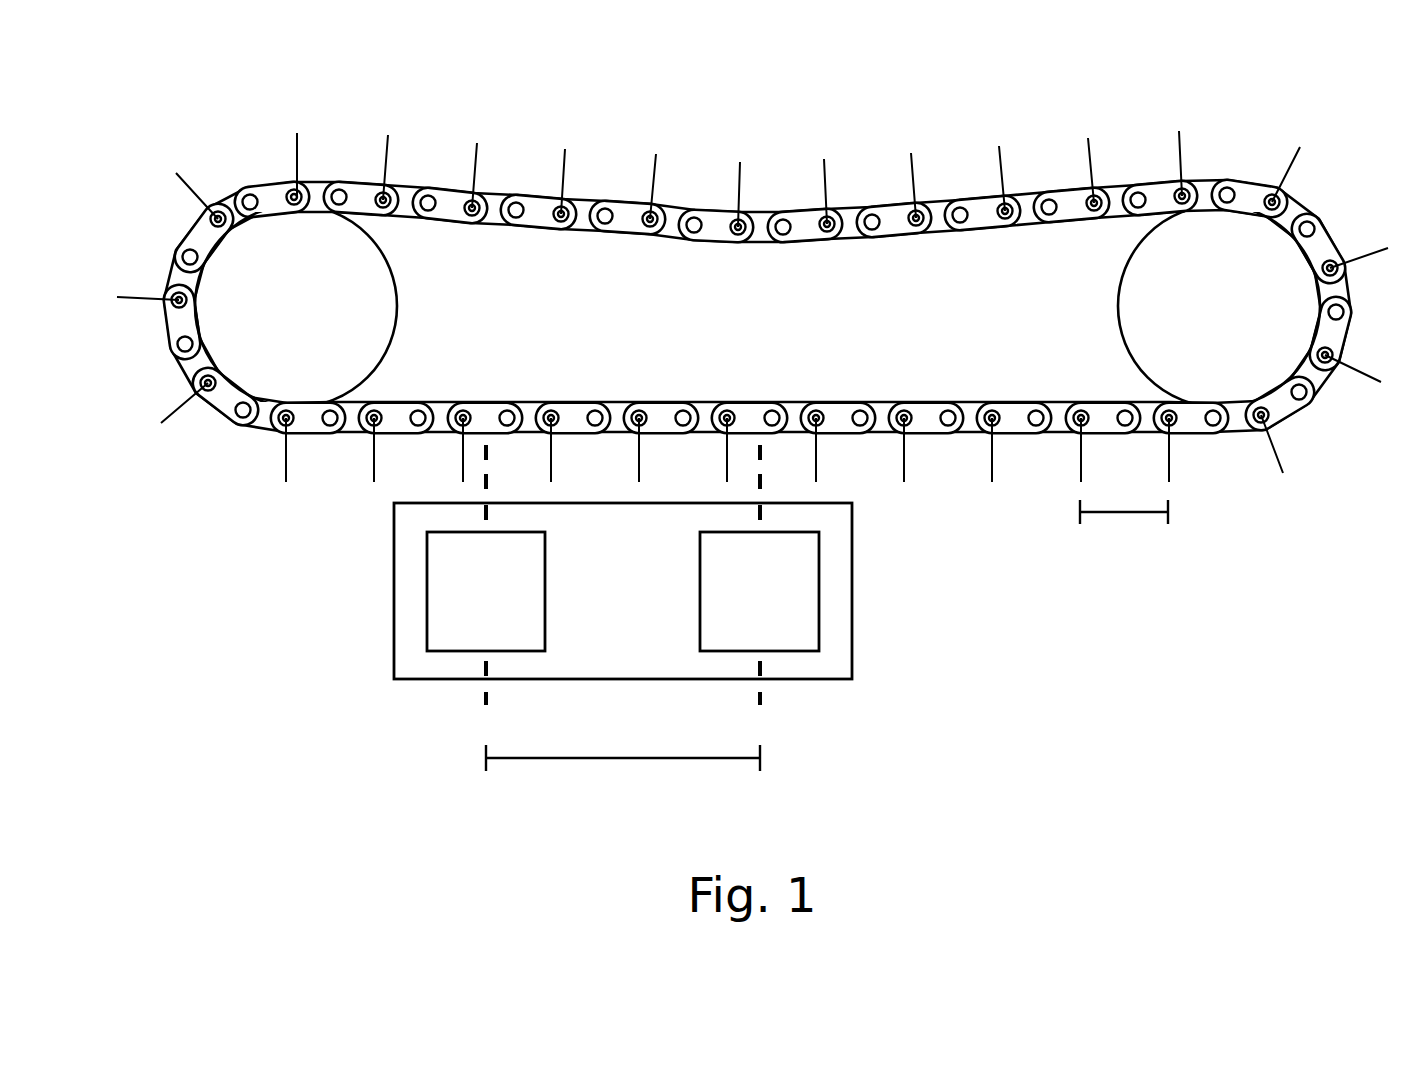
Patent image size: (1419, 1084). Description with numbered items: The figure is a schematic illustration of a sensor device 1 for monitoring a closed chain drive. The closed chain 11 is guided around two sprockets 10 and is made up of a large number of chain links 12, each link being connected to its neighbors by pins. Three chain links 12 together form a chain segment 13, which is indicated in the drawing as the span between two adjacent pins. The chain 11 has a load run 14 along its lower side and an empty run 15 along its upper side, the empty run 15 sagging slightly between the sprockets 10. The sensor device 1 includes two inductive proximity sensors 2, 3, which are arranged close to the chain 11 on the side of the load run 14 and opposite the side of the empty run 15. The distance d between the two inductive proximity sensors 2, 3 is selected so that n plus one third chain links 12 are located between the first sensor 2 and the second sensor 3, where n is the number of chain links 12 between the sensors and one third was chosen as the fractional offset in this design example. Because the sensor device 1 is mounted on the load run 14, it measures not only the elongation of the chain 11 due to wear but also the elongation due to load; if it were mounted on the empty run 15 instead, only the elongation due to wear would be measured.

The sensor device 1 is at (378, 618).
The first inductive proximity sensor 2 is at (486, 591).
The second inductive proximity sensor 3 is at (759, 591).
The sprocket 10 is at (757, 306).
The chain 11 is at (201, 186).
The chain link 12 is at (273, 198).
The chain segment 13 is at (1124, 533).
The load run 14 is at (750, 387).
The empty run 15 is at (739, 242).